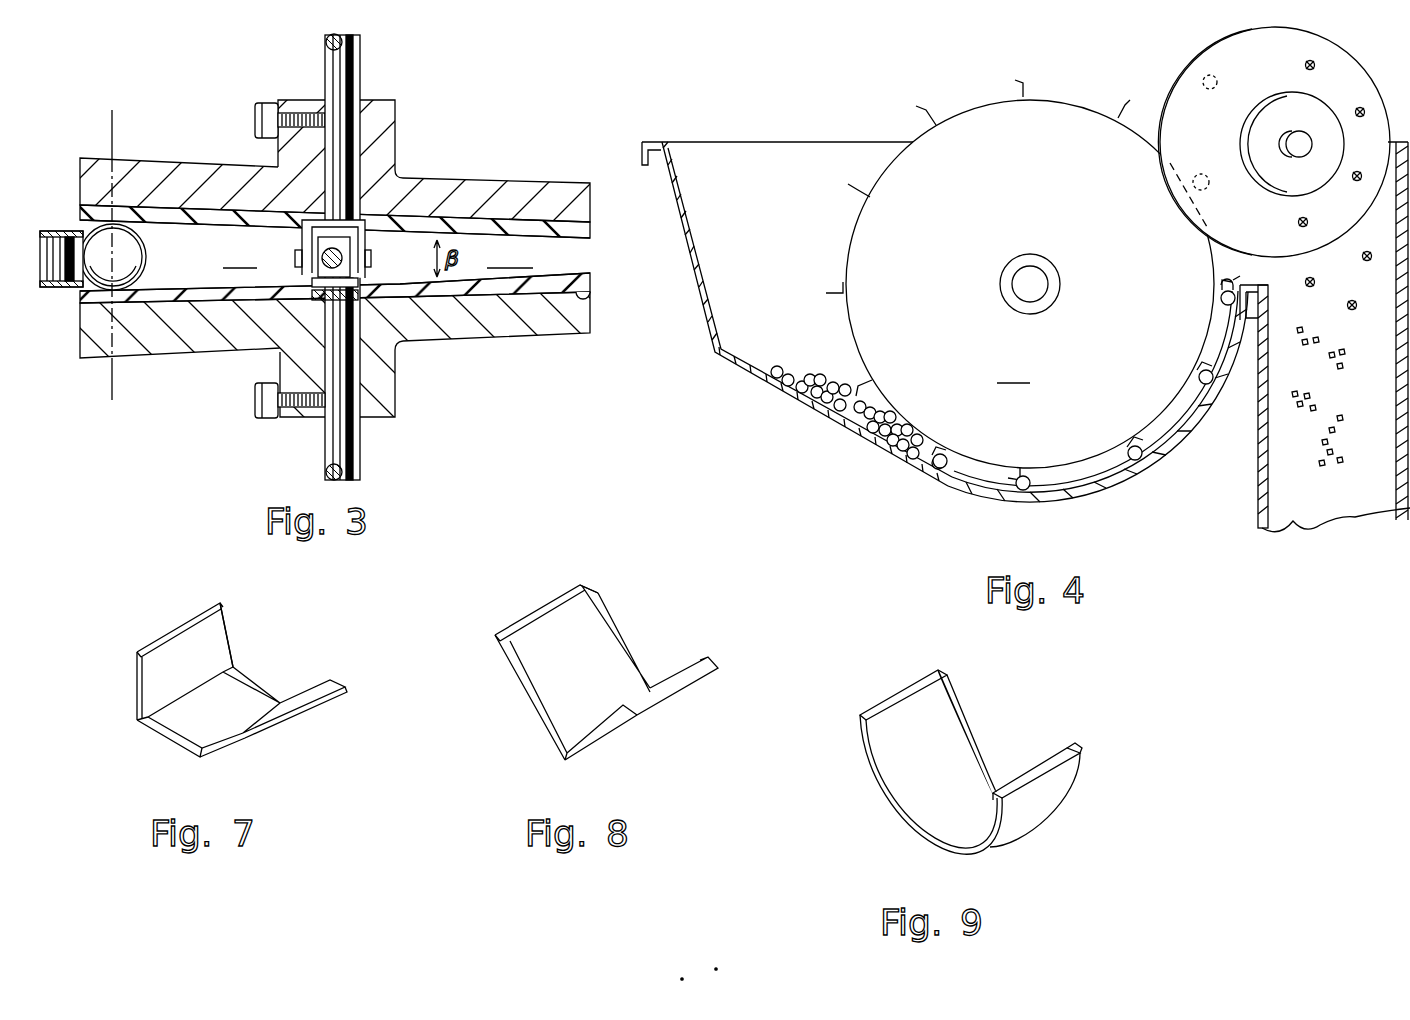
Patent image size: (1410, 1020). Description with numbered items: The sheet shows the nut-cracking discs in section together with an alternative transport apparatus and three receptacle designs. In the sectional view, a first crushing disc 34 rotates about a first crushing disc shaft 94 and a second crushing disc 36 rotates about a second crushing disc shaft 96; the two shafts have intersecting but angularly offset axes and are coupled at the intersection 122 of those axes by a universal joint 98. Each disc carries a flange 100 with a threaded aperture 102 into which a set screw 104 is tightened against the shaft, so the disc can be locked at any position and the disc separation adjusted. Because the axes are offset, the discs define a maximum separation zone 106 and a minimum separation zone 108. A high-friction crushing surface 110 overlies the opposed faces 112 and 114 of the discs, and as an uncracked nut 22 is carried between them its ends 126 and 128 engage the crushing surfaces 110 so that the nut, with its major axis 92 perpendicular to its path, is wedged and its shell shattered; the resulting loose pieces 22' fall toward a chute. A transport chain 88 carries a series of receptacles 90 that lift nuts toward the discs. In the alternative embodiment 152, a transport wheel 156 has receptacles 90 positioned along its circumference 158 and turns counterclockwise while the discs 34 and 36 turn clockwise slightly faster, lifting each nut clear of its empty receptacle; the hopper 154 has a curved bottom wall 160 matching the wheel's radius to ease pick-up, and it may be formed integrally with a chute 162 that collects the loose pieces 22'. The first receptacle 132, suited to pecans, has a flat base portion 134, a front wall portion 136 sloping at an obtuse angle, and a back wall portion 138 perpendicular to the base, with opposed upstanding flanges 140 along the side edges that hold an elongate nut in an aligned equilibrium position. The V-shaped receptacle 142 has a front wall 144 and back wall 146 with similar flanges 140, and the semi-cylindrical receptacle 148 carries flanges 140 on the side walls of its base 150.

In FIG. 3, the uncracked nut 22 is at (84, 295).
In FIG. 4, the uncracked nut 22 is at (857, 399).
In FIG. 4, the loose pieces 22' is at (1341, 396).
In FIG. 3, the first crushing disc 34 is at (525, 325).
In FIG. 4, the first crushing disc 34 is at (1348, 64).
In FIG. 3, the second crushing disc 36 is at (520, 190).
In FIG. 3, the transport chain 88 is at (60, 230).
In FIG. 3, the receptacle 90 is at (148, 258).
In FIG. 4, the receptacle 90 is at (1030, 493).
In FIG. 3, the major axis 92 is at (112, 388).
In FIG. 3, the first crushing disc shaft 94 is at (345, 458).
In FIG. 3, the second crushing disc shaft 96 is at (337, 72).
In FIG. 3, the universal joint 98 is at (371, 266).
In FIG. 3, the flange 100 is at (385, 128).
In FIG. 3, the threaded aperture 102 is at (305, 417).
In FIG. 3, the set screw 104 is at (265, 418).
In FIG. 3, the maximum separation zone 106 is at (241, 257).
In FIG. 3, the minimum separation zone 108 is at (510, 257).
In FIG. 3, the crushing surface 110 is at (588, 238).
In FIG. 3, the opposed face 112 is at (586, 290).
In FIG. 3, the opposed face 114 is at (586, 222).
In FIG. 3, the intersection 122 is at (312, 283).
In FIG. 3, the nut end 126 is at (142, 200).
In FIG. 3, the nut end 128 is at (152, 322).
In FIG. 7, the receptacle 132 is at (300, 624).
In FIG. 7, the base portion 134 is at (195, 720).
In FIG. 7, the front wall portion 136 is at (280, 712).
In FIG. 7, the back wall portion 138 is at (185, 637).
In FIG. 7, the upstanding flanges 140 is at (228, 642).
In FIG. 8, the upstanding flanges 140 is at (603, 625).
In FIG. 9, the upstanding flanges 140 is at (960, 748).
In FIG. 8, the V-shaped receptacle 142 is at (684, 598).
In FIG. 8, the front wall 144 is at (678, 695).
In FIG. 8, the back wall 146 is at (548, 613).
In FIG. 9, the semi-cylindrical receptacle 148 is at (1011, 689).
In FIG. 9, the base 150 is at (905, 686).
In FIG. 4, the alternative embodiment 152 is at (996, 118).
In FIG. 4, the hopper 154 is at (755, 152).
In FIG. 4, the transport wheel 156 is at (1030, 284).
In FIG. 4, the circumference 158 is at (968, 480).
In FIG. 4, the curved bottom wall 160 is at (1110, 500).
In FIG. 4, the chute 162 is at (1258, 470).